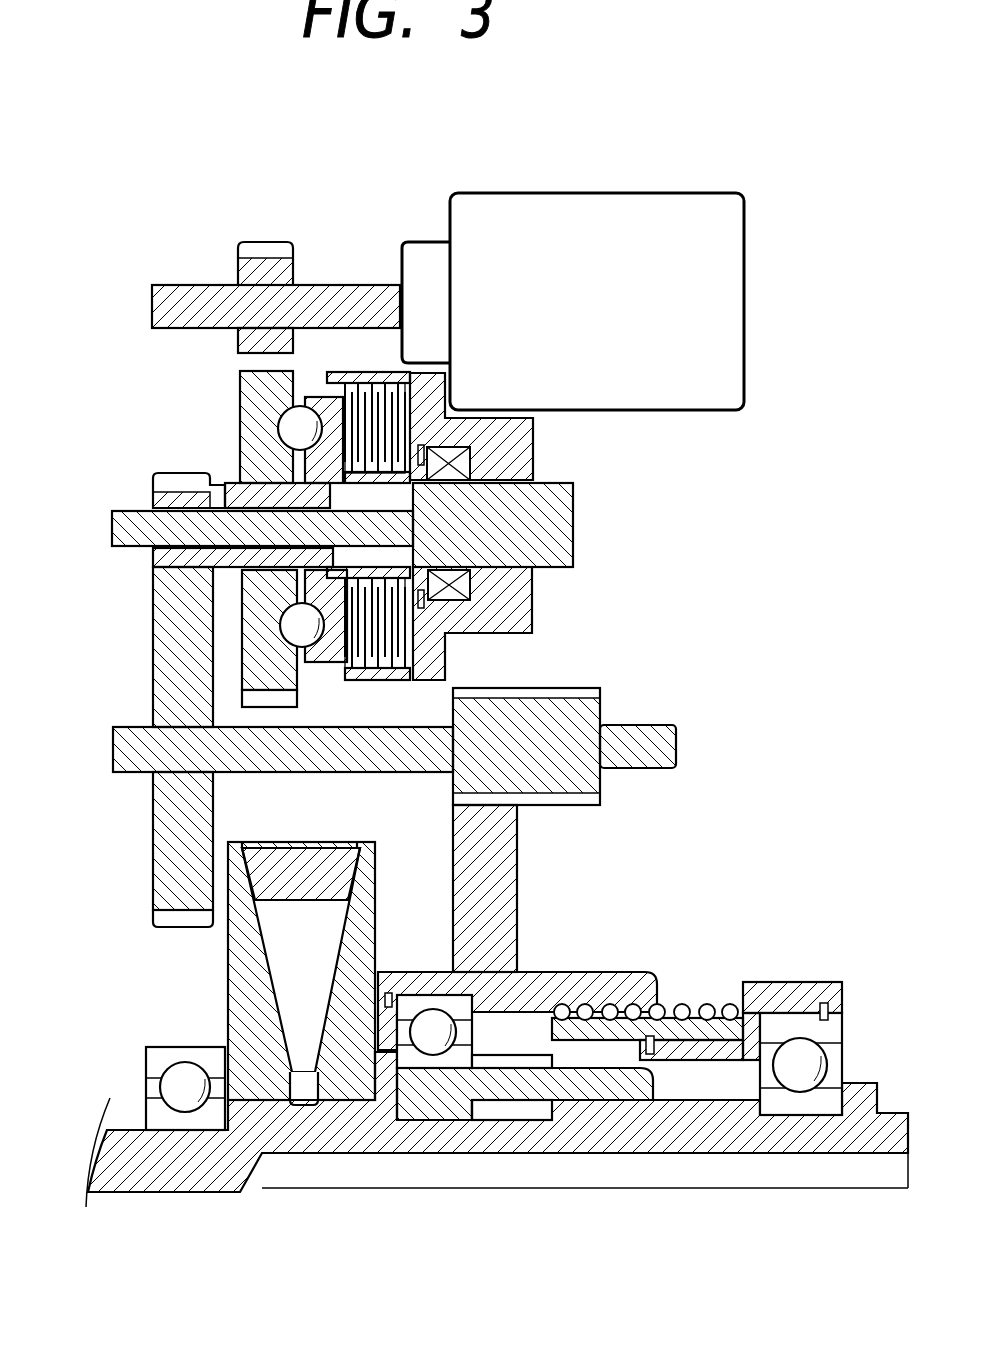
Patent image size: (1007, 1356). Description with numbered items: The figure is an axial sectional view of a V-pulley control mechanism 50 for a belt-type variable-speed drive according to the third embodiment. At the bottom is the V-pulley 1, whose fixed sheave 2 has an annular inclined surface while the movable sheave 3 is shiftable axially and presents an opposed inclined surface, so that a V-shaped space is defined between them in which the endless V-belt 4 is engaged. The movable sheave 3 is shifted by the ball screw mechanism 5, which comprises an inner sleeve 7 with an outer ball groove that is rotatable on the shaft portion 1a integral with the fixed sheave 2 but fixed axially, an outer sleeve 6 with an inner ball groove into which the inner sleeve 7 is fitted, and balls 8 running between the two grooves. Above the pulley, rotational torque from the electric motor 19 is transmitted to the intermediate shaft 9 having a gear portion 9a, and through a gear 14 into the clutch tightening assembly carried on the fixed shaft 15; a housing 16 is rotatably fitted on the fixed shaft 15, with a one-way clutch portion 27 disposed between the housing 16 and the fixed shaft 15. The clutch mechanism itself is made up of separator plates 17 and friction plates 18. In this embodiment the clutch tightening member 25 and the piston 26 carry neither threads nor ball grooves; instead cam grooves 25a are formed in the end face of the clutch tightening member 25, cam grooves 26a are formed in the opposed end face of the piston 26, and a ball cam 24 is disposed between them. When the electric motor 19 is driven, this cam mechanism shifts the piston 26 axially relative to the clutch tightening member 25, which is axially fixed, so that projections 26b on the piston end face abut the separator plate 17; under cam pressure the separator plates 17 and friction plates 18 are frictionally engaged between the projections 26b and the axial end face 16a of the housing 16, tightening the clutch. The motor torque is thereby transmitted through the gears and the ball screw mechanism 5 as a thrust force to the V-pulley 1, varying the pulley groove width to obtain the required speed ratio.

The V-pulley 1 is at (497, 1021).
The shaft portion 1a is at (715, 1137).
The fixed sheave 2 is at (228, 945).
The movable sheave 3 is at (363, 917).
The V-belt 4 is at (295, 855).
The ball screw mechanism 5 is at (685, 978).
The outer sleeve 6 is at (517, 885).
The inner sleeve 7 is at (687, 1030).
The balls 8 is at (595, 977).
The intermediate shaft 9 is at (676, 740).
The gear portion 9a is at (155, 590).
The gear 14 is at (240, 270).
The fixed shaft 15 is at (573, 545).
The housing 16 is at (525, 431).
The axial end face 16a is at (470, 455).
The separator plates 17 is at (345, 385).
The friction plates 18 is at (365, 400).
The electric motor 19 is at (744, 300).
The ball cam 24 is at (283, 430).
The clutch tightening member 25 is at (244, 398).
The cam grooves 25a is at (280, 627).
The piston 26 is at (153, 492).
The cam grooves 26a is at (340, 658).
The projections 26b is at (445, 672).
The one-way clutch portion 27 is at (470, 593).
The V-pulley control mechanism 50 is at (480, 526).